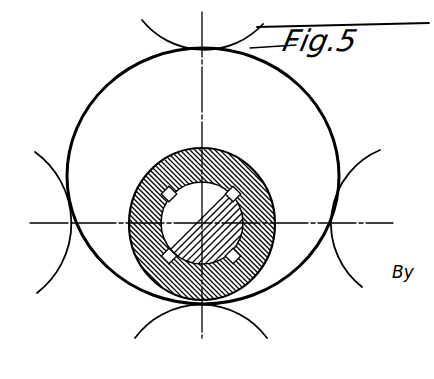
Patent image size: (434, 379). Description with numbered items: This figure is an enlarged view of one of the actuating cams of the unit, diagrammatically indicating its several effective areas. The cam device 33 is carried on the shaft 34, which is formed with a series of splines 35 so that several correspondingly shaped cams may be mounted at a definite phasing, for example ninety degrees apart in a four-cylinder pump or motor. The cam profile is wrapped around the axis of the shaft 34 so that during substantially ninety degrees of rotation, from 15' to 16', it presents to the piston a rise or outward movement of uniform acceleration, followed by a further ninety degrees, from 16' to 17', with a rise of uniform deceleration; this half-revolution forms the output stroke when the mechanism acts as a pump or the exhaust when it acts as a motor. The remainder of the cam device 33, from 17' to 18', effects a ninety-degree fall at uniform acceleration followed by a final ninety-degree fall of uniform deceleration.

The cam point 17' is at (202, 24).
The cam point 18' is at (35, 222).
The cam point 16' is at (366, 218).
The cam point 15' is at (201, 323).
The cam device 33 is at (309, 116).
The shaft 34 is at (252, 192).
The splines 35 is at (240, 190).